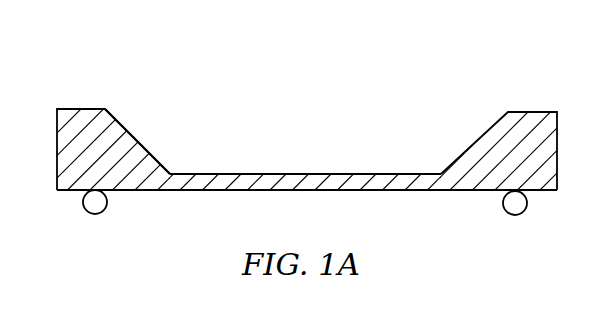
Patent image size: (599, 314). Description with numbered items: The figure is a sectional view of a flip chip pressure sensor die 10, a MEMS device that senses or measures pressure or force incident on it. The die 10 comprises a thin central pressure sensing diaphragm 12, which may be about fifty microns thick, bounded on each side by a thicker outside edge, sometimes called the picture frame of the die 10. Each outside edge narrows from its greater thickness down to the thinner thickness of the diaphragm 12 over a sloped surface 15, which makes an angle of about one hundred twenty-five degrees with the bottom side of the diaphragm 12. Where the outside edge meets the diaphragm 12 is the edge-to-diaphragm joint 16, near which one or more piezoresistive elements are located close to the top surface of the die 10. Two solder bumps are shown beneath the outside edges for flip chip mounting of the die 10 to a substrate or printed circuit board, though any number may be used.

The pressure sensor die 10 is at (402, 53).
The pressure sensing diaphragm 12 is at (313, 174).
The sloped surface 15 is at (146, 148).
The edge-to-diaphragm joint 16 is at (164, 190).